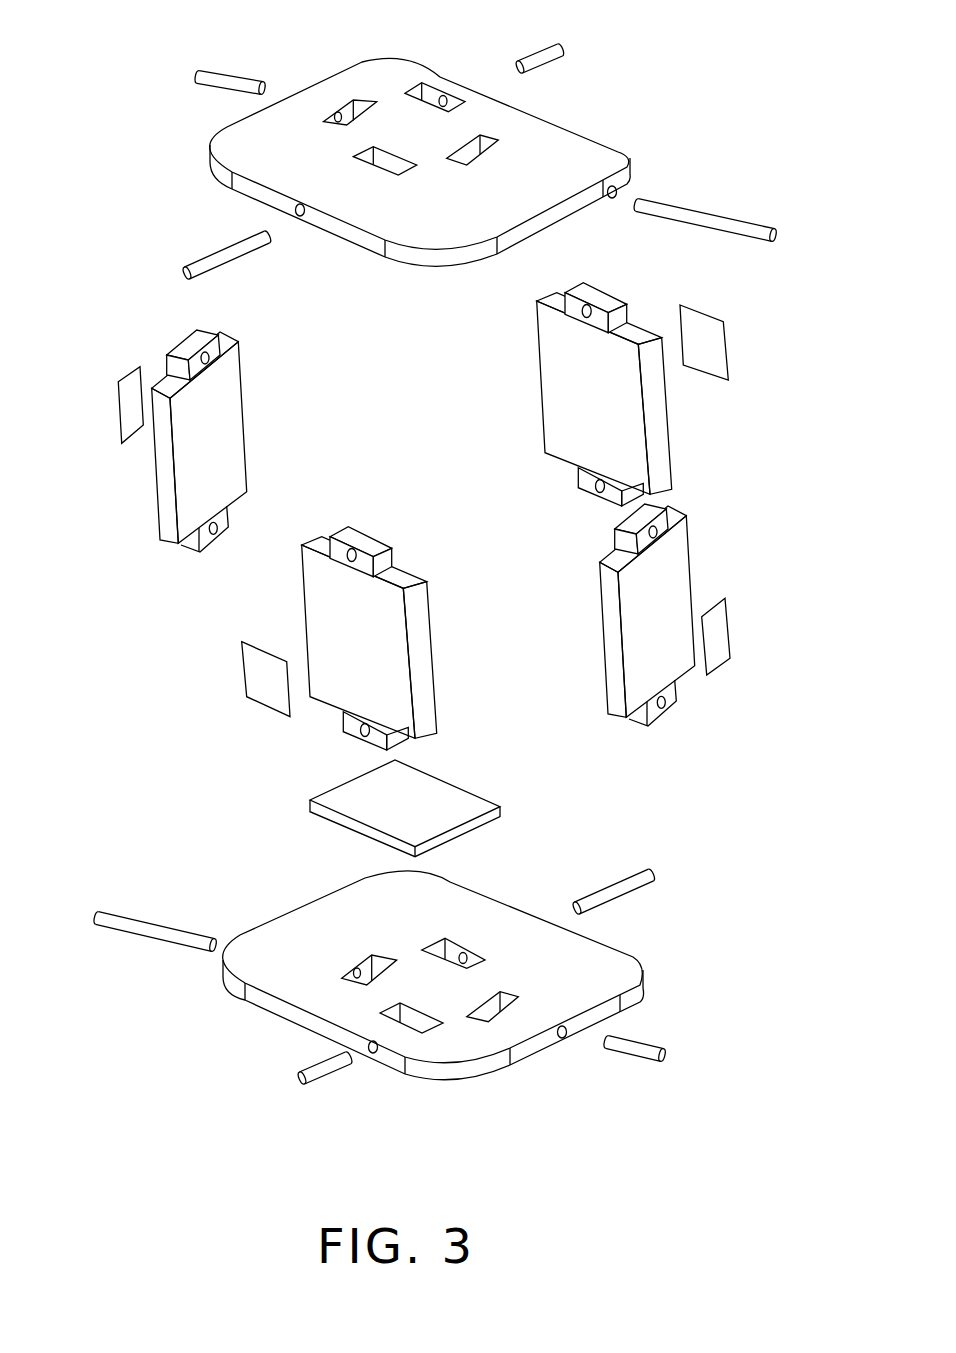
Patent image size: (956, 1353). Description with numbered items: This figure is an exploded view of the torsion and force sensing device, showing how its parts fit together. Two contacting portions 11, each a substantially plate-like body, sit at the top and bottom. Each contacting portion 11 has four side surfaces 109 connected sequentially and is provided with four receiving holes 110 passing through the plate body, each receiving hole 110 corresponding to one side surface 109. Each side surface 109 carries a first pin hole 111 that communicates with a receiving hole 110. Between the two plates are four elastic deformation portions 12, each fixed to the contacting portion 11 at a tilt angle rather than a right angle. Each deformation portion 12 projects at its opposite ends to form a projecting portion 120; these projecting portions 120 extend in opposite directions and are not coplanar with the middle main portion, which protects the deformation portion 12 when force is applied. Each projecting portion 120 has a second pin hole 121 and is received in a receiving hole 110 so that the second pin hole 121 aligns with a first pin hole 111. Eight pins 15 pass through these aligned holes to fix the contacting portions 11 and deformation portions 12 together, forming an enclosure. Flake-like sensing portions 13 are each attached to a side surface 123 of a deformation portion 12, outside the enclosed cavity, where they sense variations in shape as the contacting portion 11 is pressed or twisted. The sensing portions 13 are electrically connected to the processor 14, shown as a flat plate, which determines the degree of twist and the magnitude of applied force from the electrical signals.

The contacting portion 11 is at (435, 172).
The side surface 109 is at (630, 165).
The receiving hole 110 is at (361, 105).
The first pin hole 111 is at (293, 208).
The deformation portion 12 is at (596, 390).
The projecting portion 120 is at (572, 390).
The second pin hole 121 is at (583, 308).
The side surface 123 is at (677, 552).
The sensing portion 13 is at (723, 348).
The processor 14 is at (463, 802).
The pin 15 is at (648, 875).